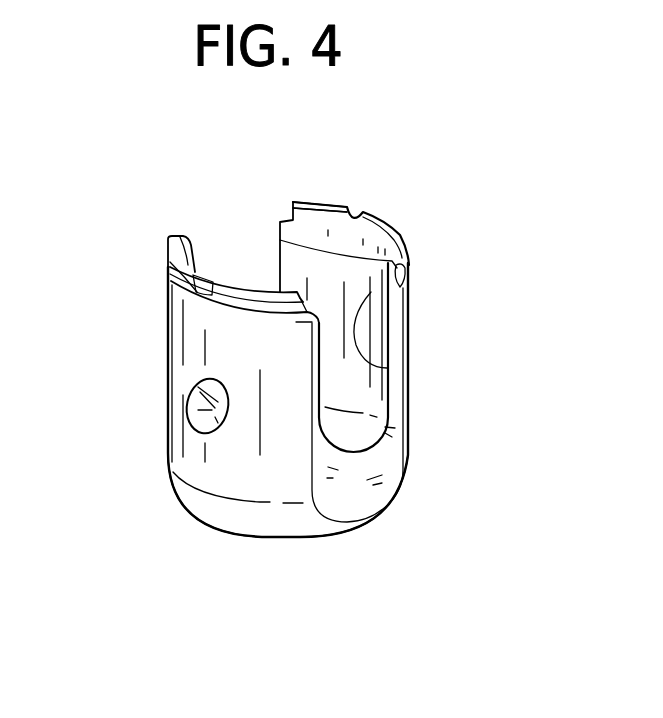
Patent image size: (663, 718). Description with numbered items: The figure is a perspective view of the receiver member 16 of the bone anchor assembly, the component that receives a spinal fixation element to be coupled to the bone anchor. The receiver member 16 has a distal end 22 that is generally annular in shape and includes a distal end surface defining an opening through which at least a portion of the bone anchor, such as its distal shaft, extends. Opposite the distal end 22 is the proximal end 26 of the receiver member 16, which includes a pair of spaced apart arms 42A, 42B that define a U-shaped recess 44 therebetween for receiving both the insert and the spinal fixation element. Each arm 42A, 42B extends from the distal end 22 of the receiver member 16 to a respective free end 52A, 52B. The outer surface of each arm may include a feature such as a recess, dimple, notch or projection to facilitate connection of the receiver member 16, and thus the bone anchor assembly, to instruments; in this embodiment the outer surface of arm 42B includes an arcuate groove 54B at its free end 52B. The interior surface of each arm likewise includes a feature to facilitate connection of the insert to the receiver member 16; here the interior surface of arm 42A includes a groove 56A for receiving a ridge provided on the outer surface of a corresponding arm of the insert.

The receiver member 16 is at (446, 324).
The distal end 22 is at (234, 500).
The proximal end 26 is at (228, 362).
The arm 42A is at (405, 302).
The arm 42B is at (185, 355).
The U-shaped recess 44 is at (216, 230).
The free end 52A is at (315, 200).
The free end 52B is at (167, 261).
The arcuate groove 54B is at (170, 298).
The groove 56A is at (387, 368).